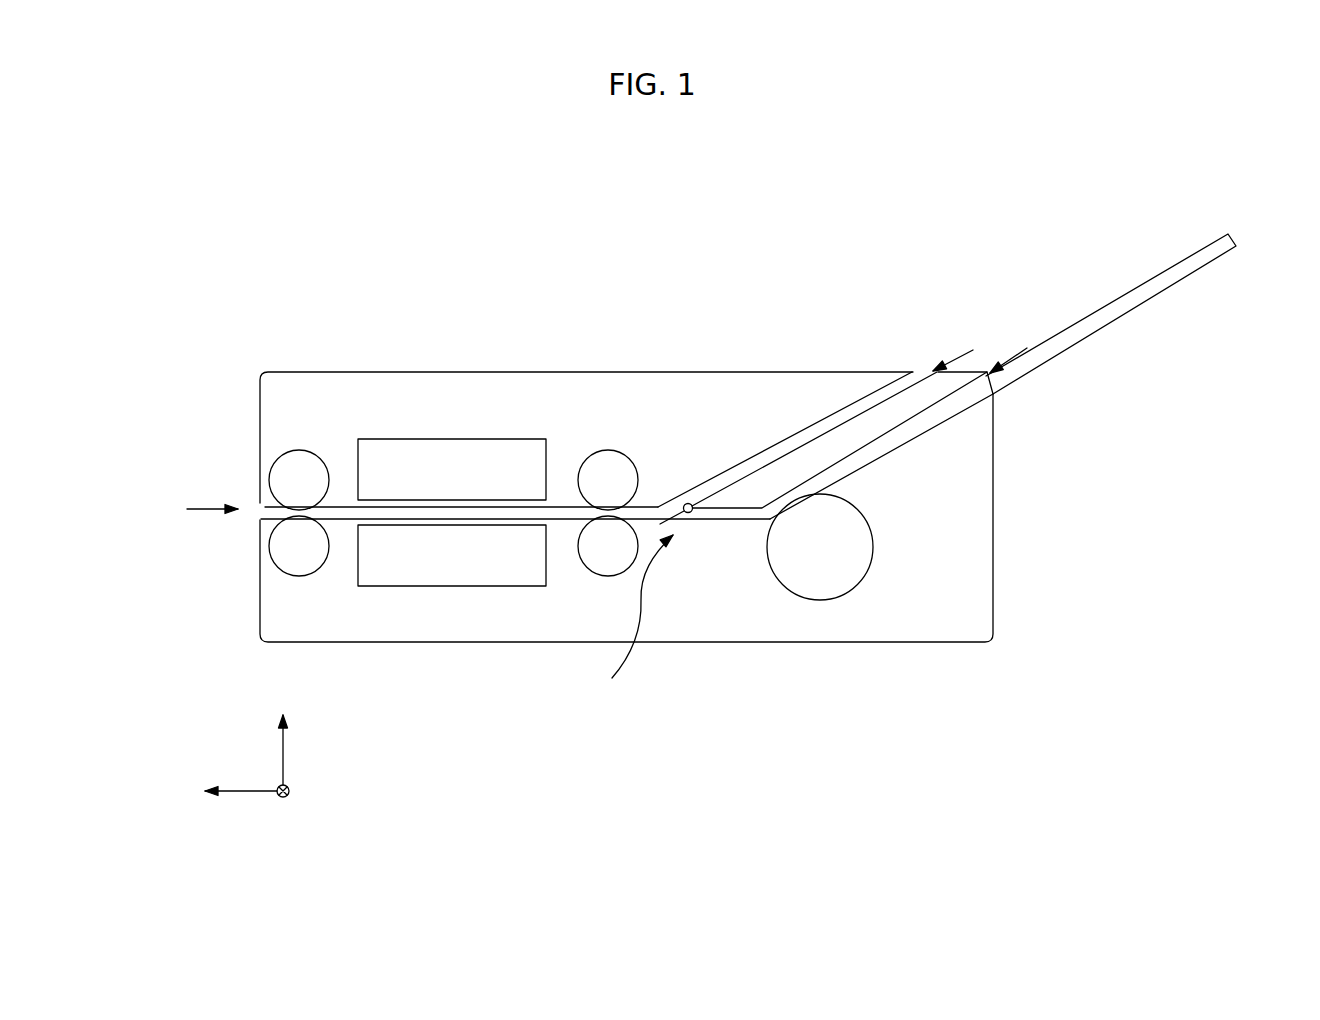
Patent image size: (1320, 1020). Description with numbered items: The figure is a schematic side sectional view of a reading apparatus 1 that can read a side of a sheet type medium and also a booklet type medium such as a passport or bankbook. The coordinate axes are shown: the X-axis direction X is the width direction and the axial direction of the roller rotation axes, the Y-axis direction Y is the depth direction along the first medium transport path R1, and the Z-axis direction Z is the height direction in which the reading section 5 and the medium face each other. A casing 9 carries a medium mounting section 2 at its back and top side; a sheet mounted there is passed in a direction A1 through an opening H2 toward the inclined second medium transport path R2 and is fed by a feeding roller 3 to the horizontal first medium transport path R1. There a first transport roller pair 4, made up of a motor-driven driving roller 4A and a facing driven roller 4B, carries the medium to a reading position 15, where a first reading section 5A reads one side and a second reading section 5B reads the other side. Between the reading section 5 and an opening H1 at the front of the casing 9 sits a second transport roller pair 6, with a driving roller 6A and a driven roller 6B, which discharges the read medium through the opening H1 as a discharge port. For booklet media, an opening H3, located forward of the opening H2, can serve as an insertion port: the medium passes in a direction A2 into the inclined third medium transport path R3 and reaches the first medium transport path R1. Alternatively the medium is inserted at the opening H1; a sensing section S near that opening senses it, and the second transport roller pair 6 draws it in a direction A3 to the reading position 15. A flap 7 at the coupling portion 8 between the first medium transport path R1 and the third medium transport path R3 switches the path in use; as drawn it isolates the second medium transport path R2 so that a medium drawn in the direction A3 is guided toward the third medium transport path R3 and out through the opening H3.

The reading apparatus 1 is at (1003, 228).
The medium mounting section 2 is at (1104, 307).
The feeding roller 3 is at (813, 553).
The first transport roller pair 4 is at (535, 313).
The driving roller 4A is at (602, 540).
The driven roller 4B is at (614, 480).
The reading section 5 is at (418, 311).
The first reading section 5A is at (450, 560).
The second reading section 5B is at (393, 462).
The second transport roller pair 6 is at (393, 314).
The driving roller 6A is at (300, 545).
The driven roller 6B is at (297, 470).
The flap 7 is at (682, 523).
The coupling portion 8 is at (631, 623).
The casing 9 is at (993, 453).
The reading position 15 is at (474, 516).
The sensing section S is at (265, 507).
The opening H1 is at (256, 506).
The opening H2 is at (985, 372).
The opening H3 is at (915, 372).
The direction A1 is at (1013, 346).
The direction A2 is at (952, 345).
The direction A3 is at (212, 489).
The first medium transport path R1 is at (384, 518).
The second medium transport path R2 is at (845, 464).
The third medium transport path R3 is at (762, 457).
The X-axis direction X is at (297, 796).
The Y-axis direction Y is at (228, 791).
The Z-axis direction Z is at (283, 731).